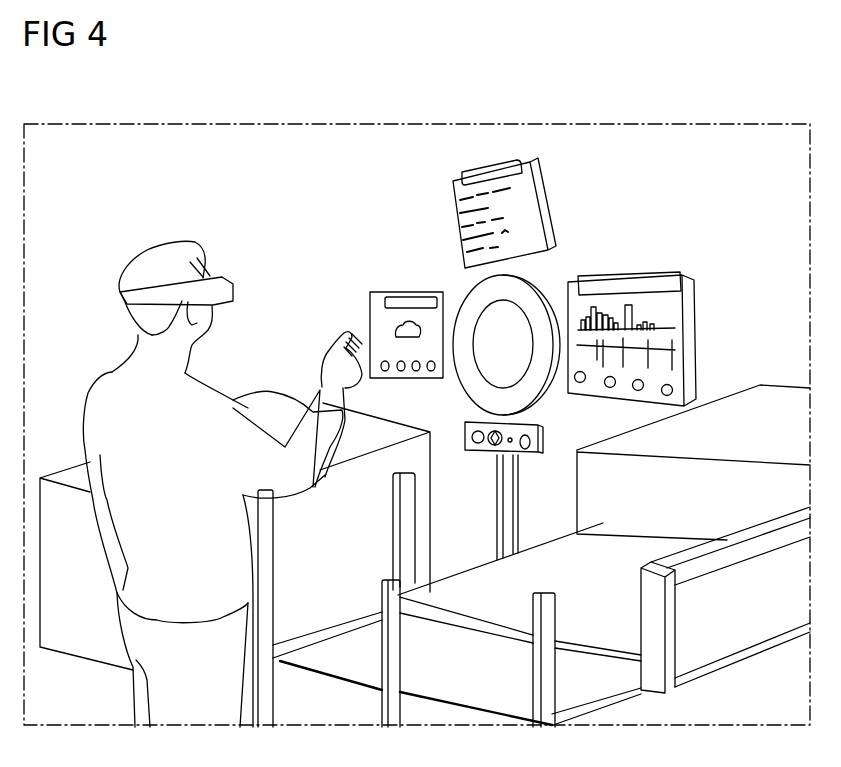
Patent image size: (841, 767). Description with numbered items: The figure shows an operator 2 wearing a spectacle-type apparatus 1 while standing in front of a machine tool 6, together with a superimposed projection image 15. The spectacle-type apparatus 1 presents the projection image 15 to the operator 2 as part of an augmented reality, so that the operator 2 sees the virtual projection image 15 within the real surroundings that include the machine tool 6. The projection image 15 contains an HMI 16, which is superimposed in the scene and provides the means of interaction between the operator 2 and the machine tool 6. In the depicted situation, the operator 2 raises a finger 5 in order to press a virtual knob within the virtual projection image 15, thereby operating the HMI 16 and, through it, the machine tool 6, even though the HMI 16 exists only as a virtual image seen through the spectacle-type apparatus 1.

The spectacle-type apparatus 1 is at (220, 278).
The operator 2 is at (160, 258).
The finger 5 is at (347, 333).
The machine tool 6 is at (757, 363).
The projection image 15 is at (695, 77).
The HMI 16 is at (570, 209).